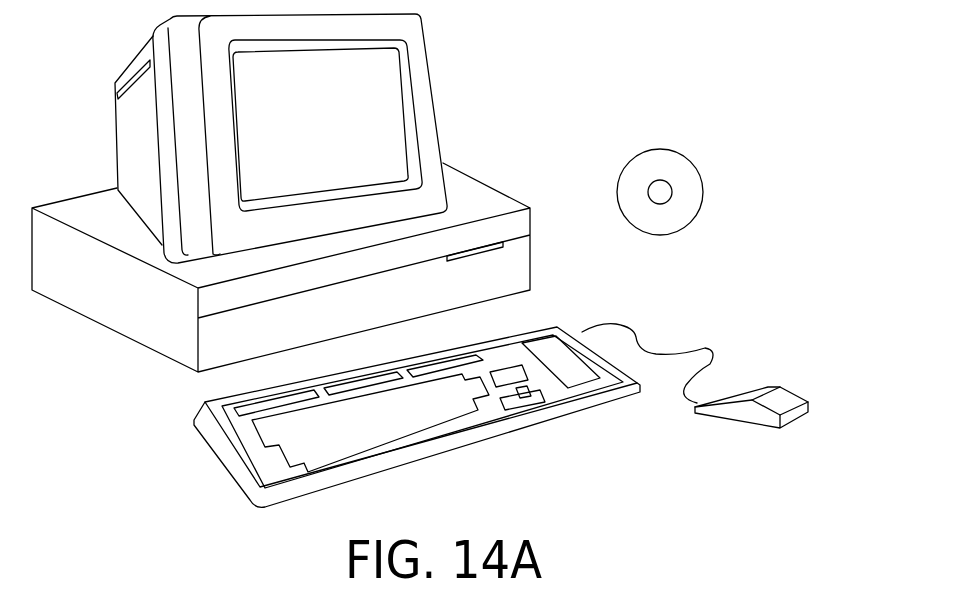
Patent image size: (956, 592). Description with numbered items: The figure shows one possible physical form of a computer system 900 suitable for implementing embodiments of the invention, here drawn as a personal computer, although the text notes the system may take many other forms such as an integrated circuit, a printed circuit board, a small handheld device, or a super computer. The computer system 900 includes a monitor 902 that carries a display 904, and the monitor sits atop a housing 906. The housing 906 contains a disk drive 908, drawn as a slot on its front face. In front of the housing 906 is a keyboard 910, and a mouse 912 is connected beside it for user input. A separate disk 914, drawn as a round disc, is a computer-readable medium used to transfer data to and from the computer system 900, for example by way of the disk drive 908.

The computer system 900 is at (562, 62).
The monitor 902 is at (438, 111).
The display 904 is at (397, 78).
The housing 906 is at (148, 349).
The disk drive 908 is at (503, 244).
The keyboard 910 is at (513, 431).
The mouse 912 is at (782, 389).
The disk 914 is at (677, 154).